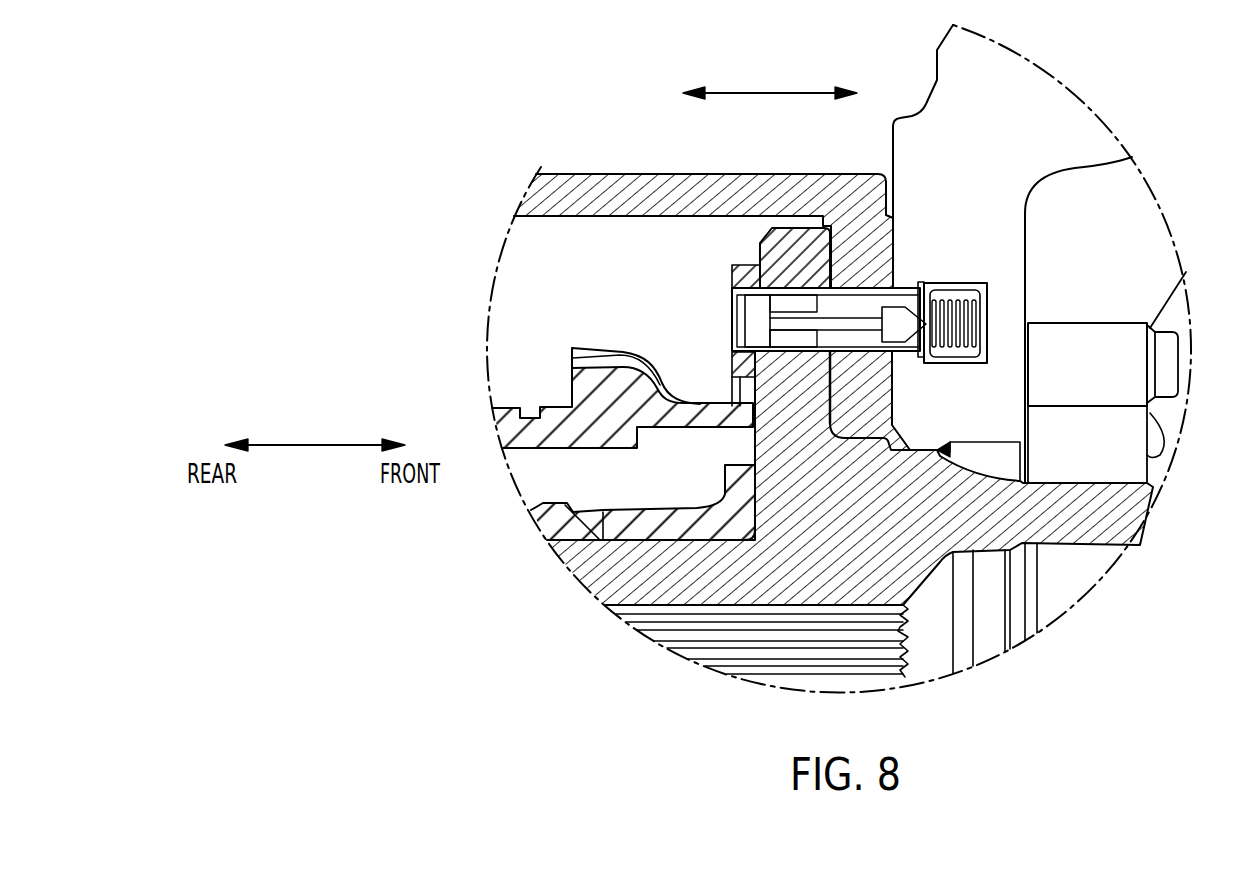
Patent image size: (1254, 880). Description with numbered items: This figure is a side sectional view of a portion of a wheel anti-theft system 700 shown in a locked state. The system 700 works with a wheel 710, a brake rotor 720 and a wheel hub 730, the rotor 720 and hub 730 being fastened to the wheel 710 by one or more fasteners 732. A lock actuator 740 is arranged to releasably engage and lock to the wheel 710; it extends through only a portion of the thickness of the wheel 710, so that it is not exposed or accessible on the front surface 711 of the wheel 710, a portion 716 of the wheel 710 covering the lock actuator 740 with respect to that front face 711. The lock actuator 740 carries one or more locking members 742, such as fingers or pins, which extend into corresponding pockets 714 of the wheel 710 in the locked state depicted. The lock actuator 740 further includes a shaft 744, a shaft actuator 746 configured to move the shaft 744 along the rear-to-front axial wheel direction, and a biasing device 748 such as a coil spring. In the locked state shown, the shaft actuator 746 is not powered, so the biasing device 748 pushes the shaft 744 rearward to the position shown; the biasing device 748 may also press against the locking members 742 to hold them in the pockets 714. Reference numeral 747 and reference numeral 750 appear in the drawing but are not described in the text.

The wheel anti-theft system 700 is at (466, 237).
The wheel 710 is at (1027, 73).
The front surface 711 is at (1162, 248).
The pockets 714 is at (929, 266).
The portion 716 is at (1014, 302).
The brake rotor 720 is at (612, 190).
The wheel hub 730 is at (1127, 515).
The fasteners 732 is at (1125, 382).
The lock actuator 740 is at (732, 312).
The locking members 742 is at (918, 283).
The shaft 744 is at (900, 297).
The shaft actuator 746 is at (800, 301).
The piston 747 is at (745, 322).
The biasing device 748 is at (962, 300).
The axial movement 750 is at (762, 92).